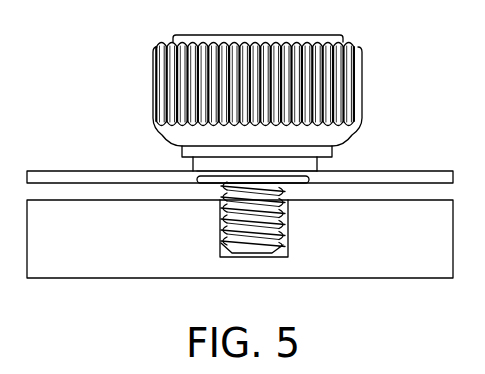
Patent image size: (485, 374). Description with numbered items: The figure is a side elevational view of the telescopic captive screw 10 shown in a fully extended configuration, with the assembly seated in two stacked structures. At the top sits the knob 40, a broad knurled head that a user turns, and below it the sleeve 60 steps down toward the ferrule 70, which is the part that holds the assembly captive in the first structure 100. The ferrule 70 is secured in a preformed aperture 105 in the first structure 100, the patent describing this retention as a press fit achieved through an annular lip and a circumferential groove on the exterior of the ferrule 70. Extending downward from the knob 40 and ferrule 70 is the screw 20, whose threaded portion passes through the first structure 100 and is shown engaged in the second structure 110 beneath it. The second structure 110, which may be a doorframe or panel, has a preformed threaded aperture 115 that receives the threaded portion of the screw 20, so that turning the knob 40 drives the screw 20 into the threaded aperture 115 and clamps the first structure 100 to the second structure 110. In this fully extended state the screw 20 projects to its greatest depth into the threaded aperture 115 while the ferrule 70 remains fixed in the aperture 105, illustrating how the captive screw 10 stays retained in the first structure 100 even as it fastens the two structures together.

The telescopic captive screw 10 is at (126, 48).
The screw 20 is at (250, 244).
The knob 40 is at (359, 92).
The sleeve 60 is at (333, 150).
The ferrule 70 is at (318, 172).
The first structure 100 is at (117, 179).
The preformed aperture 105 is at (306, 184).
The second structure 110 is at (119, 243).
The threaded aperture 115 is at (283, 253).